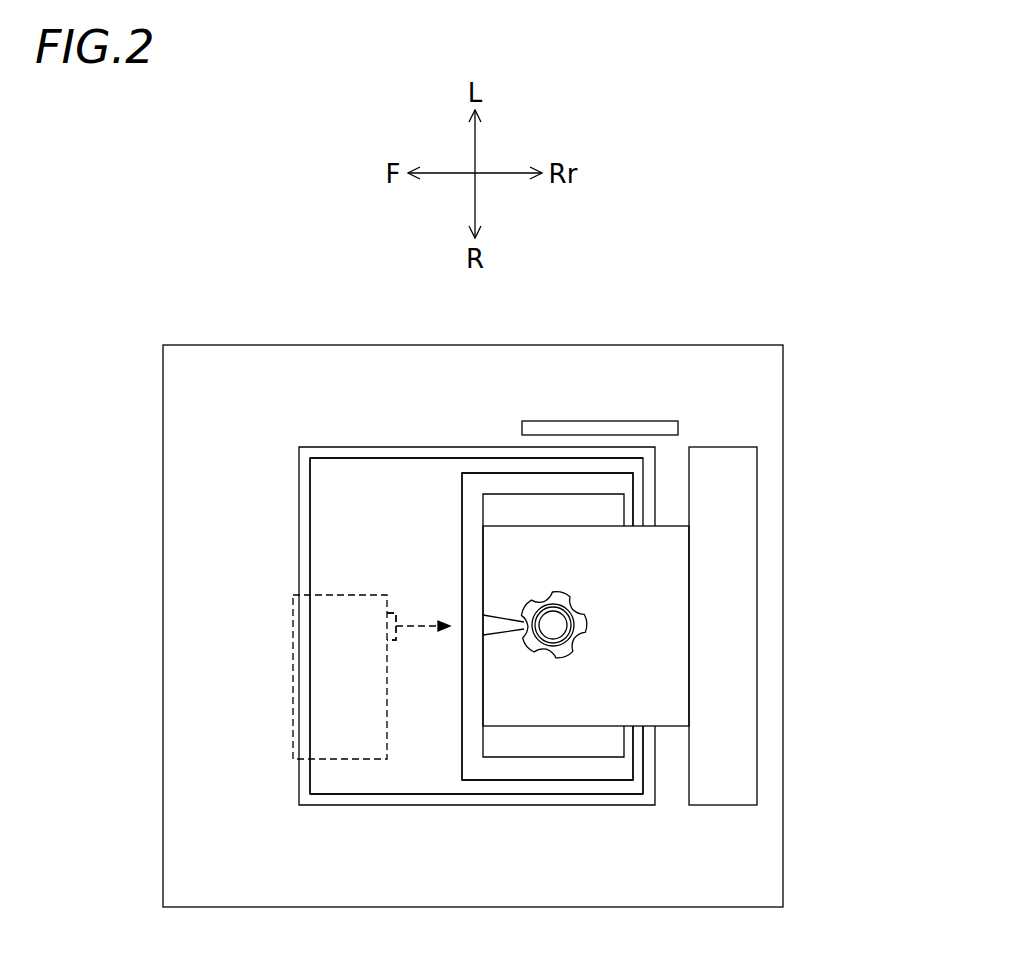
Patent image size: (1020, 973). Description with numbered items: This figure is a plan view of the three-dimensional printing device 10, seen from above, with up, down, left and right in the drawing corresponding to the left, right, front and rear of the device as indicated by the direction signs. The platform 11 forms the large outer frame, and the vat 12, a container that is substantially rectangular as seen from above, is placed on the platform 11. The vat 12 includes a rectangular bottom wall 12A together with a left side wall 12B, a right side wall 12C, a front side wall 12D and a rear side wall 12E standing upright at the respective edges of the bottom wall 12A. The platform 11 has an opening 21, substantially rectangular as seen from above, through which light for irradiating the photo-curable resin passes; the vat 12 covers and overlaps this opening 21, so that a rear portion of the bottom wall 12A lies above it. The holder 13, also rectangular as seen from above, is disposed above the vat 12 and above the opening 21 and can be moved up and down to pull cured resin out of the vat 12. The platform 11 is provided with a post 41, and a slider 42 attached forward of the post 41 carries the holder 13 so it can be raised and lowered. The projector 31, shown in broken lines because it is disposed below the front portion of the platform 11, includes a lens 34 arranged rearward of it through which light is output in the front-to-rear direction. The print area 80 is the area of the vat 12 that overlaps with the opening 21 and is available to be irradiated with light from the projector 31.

The three-dimensional printing device 10 is at (776, 240).
The platform 11 is at (653, 344).
The vat 12 is at (335, 447).
The bottom wall 12A is at (402, 478).
The left side wall 12B is at (474, 454).
The right side wall 12C is at (452, 800).
The front side wall 12D is at (305, 778).
The rear side wall 12E is at (648, 775).
The holder 13 is at (541, 760).
The opening 21 is at (462, 525).
The projector 31 is at (293, 640).
The lens 34 is at (402, 639).
The post 41 is at (757, 518).
The slider 42 is at (557, 526).
The print area 80 is at (607, 782).